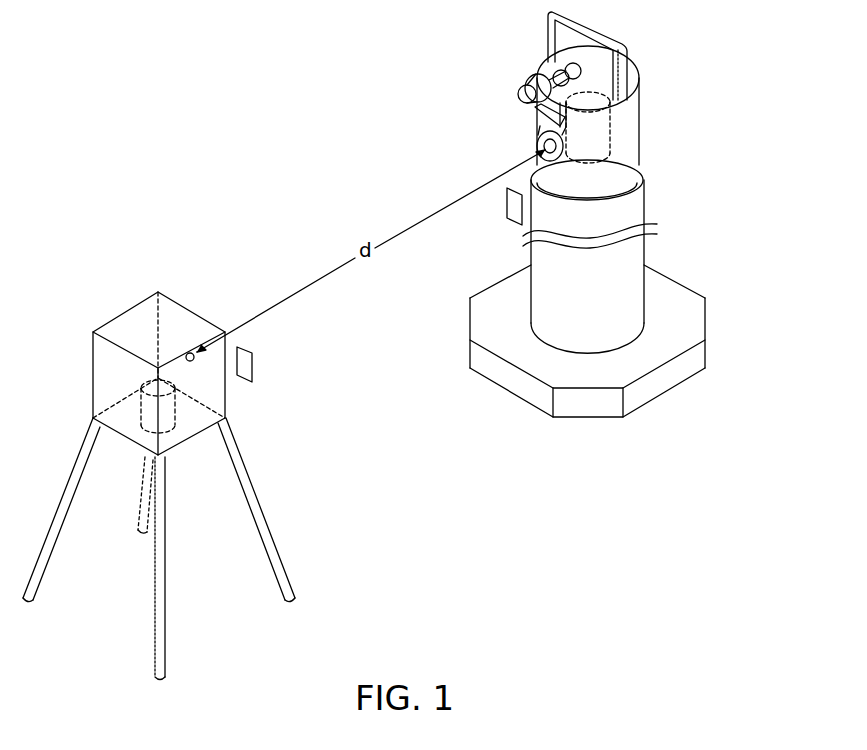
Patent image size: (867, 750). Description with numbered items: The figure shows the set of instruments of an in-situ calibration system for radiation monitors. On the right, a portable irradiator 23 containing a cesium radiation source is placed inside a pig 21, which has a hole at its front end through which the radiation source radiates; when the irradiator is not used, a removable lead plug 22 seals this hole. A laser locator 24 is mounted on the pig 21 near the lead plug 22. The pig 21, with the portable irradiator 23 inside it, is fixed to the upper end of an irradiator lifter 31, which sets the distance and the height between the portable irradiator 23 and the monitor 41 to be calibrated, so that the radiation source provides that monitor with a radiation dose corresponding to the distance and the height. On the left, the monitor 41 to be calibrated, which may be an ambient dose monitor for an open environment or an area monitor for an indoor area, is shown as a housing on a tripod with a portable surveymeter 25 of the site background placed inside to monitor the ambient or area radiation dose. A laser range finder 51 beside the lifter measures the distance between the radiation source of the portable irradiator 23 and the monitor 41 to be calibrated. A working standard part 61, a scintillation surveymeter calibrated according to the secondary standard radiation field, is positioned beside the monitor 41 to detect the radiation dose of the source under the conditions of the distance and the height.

The pig 21 is at (625, 117).
The removable lead plug 22 is at (547, 133).
The portable irradiator 23 is at (600, 143).
The laser locator 24 is at (547, 72).
The portable surveymeter 25 is at (150, 410).
The irradiator lifter 31 is at (658, 250).
The monitor to be calibrated 41 is at (132, 320).
The laser range finder 51 is at (504, 210).
The working standard part 61 is at (256, 368).